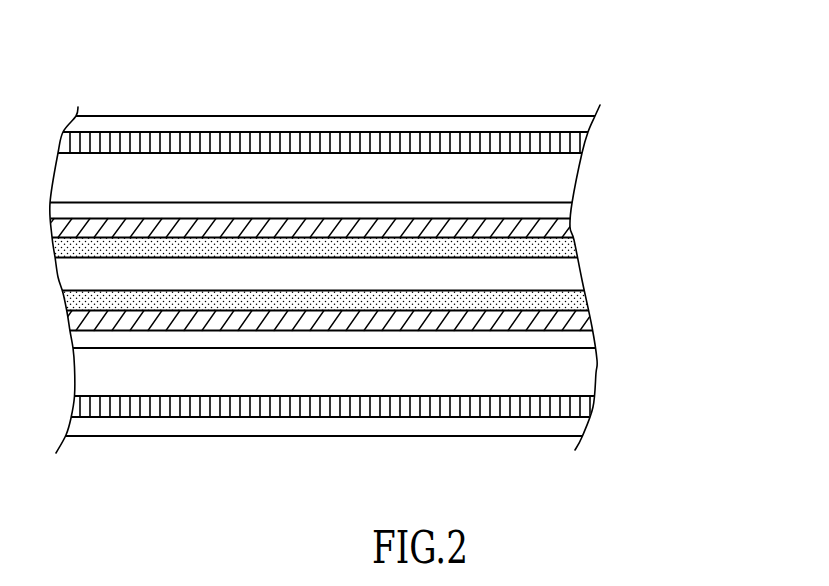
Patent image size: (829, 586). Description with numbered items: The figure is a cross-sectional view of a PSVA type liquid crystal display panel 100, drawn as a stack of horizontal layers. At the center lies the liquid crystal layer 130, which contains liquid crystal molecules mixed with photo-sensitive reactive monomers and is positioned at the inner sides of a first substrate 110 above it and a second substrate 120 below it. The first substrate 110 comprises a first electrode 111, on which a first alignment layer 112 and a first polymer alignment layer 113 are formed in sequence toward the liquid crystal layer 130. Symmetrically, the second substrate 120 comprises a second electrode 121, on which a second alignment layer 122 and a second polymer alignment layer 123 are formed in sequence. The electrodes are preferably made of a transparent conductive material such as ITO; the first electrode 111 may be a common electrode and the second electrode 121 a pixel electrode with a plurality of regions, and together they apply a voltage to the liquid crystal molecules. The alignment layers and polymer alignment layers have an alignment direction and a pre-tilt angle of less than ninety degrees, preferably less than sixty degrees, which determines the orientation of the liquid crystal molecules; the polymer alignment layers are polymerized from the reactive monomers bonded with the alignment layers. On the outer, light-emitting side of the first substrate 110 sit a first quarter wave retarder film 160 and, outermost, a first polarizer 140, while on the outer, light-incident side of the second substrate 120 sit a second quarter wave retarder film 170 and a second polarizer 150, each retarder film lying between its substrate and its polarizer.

The liquid crystal display panel 100 is at (712, 126).
The first substrate 110 is at (568, 168).
The first electrode 111 is at (560, 212).
The first alignment layer 112 is at (573, 223).
The first polymer alignment layer 113 is at (575, 245).
The second substrate 120 is at (585, 375).
The second electrode 121 is at (585, 340).
The second alignment layer 122 is at (592, 318).
The second polymer alignment layer 123 is at (587, 302).
The liquid crystal layer 130 is at (577, 272).
The first polarizer 140 is at (543, 122).
The second polarizer 150 is at (567, 426).
The first quarter wave retarder film 160 is at (587, 140).
The second quarter wave retarder film 170 is at (573, 411).